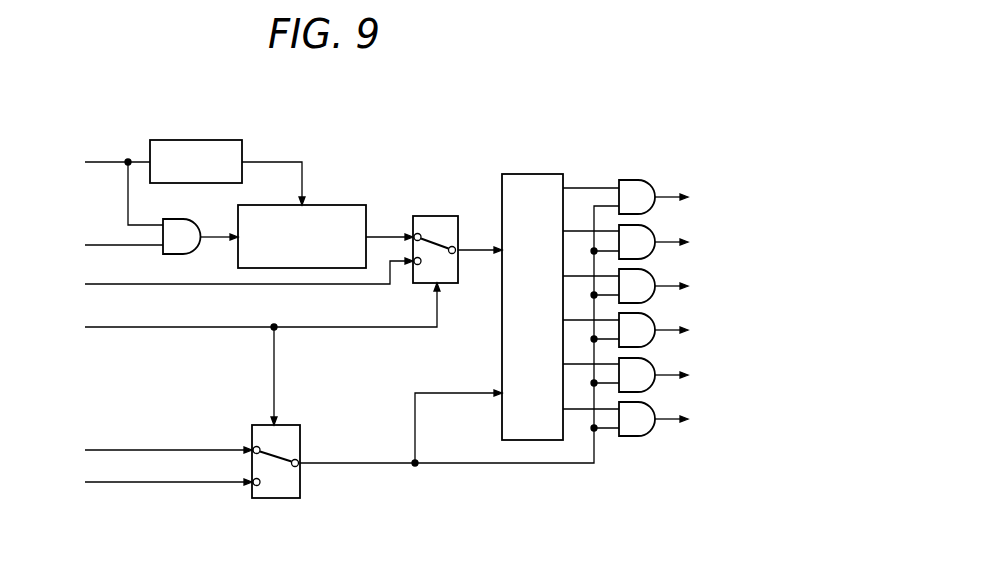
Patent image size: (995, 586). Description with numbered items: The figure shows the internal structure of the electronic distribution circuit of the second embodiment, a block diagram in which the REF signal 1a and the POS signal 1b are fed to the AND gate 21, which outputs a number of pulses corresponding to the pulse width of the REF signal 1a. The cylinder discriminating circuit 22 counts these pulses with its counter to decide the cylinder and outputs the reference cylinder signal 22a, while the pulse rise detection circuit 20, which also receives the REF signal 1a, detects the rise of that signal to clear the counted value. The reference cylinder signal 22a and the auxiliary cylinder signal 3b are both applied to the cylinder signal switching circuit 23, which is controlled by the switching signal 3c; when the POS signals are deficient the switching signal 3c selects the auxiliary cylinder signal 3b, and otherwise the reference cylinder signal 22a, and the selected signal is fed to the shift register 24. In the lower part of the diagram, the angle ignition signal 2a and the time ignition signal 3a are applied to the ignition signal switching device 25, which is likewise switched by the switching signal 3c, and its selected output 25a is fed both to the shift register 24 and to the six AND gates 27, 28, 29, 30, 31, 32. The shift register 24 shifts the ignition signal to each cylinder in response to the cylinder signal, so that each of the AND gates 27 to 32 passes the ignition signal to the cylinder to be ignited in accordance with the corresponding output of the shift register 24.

The REF signal 1a is at (113, 188).
The POS signal 1b is at (113, 248).
The angle ignition signal 2a is at (157, 452).
The time ignition signal 3a is at (157, 484).
The auxiliary cylinder signal 3b is at (236, 278).
The switching signal 3c is at (250, 354).
The pulse rise detection circuit 20 is at (220, 140).
The AND gate 21 is at (203, 220).
The cylinder discriminating circuit 22 is at (351, 205).
The reference cylinder signal 22a is at (387, 232).
The cylinder signal switching circuit 23 is at (447, 215).
The shift register 24 is at (556, 173).
The ignition signal switching device 25 is at (303, 437).
The selected ignition signal 25a is at (358, 460).
The AND gate 27 is at (655, 183).
The AND gate 28 is at (655, 228).
The AND gate 29 is at (655, 272).
The AND gate 30 is at (655, 316).
The AND gate 31 is at (655, 361).
The AND gate 32 is at (655, 405).